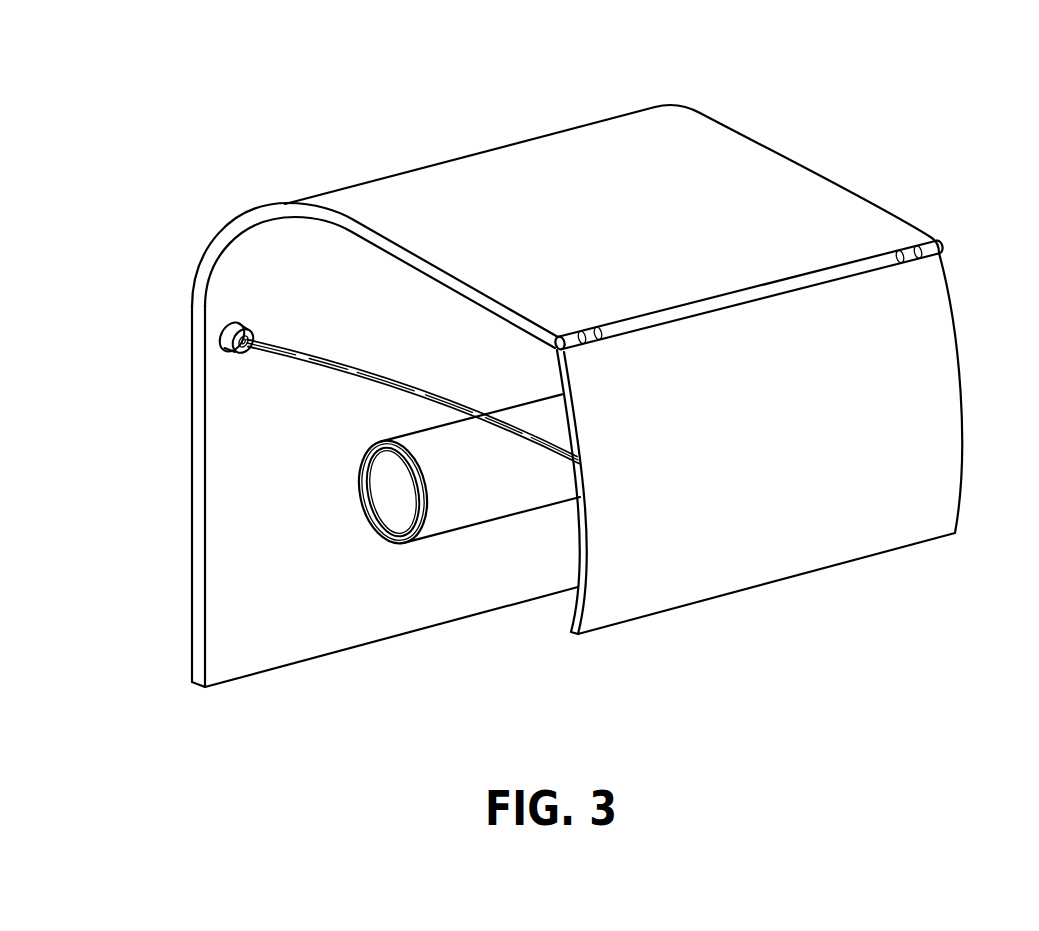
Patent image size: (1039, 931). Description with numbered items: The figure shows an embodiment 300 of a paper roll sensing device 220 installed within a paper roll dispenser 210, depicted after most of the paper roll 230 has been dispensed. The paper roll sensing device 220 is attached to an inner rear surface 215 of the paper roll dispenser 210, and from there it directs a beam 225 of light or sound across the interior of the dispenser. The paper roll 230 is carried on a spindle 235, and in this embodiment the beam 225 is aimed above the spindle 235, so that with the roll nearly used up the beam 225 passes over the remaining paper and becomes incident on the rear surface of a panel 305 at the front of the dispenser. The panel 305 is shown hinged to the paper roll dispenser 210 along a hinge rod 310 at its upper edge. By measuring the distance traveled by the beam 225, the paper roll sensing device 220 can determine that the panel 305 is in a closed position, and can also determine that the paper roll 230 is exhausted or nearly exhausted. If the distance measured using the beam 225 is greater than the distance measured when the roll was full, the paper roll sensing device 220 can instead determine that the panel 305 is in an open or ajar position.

The embodiment of a paper roll sensing device installed within a paper roll dispense 300 is at (129, 108).
The paper roll dispenser 210 is at (337, 191).
The inner rear surface 215 is at (226, 284).
The paper roll sensing device 220 is at (224, 326).
The beam 225 is at (314, 364).
The paper roll 230 is at (362, 477).
The spindle 235 is at (384, 505).
The panel 305 is at (608, 581).
The hinge rod 310 is at (563, 336).